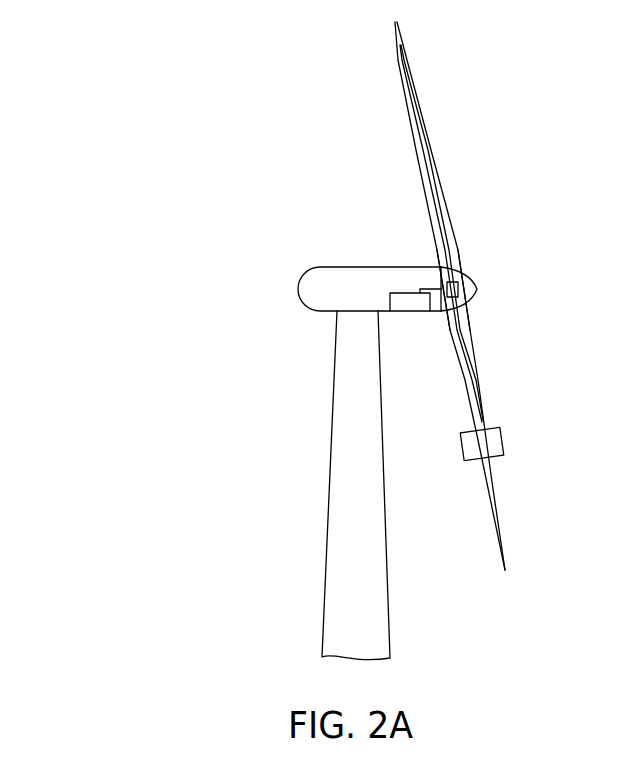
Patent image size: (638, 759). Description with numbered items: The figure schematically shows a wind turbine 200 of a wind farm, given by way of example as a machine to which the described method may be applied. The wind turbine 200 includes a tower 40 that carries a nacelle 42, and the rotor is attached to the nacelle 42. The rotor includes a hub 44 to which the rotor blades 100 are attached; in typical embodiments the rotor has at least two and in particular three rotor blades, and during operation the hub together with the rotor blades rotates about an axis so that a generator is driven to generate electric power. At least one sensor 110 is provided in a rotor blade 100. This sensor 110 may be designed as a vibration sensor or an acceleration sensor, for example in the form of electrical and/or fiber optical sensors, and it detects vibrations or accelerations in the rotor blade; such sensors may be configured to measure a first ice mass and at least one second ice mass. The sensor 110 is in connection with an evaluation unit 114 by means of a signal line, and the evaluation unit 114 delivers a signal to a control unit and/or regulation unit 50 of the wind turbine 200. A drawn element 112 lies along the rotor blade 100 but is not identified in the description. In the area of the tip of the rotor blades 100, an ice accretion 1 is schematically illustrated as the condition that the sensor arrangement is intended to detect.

The wind turbine 200 is at (165, 120).
The tower 40 is at (327, 513).
The nacelle 42 is at (298, 284).
The hub 44 is at (476, 289).
The control unit and/or regulation unit 50 is at (412, 311).
The rotor blade 100 is at (505, 296).
The sensor 110 is at (428, 153).
The leading edge strip 112 is at (447, 219).
The evaluation unit 114 is at (470, 293).
The ice accretion 1 is at (503, 441).